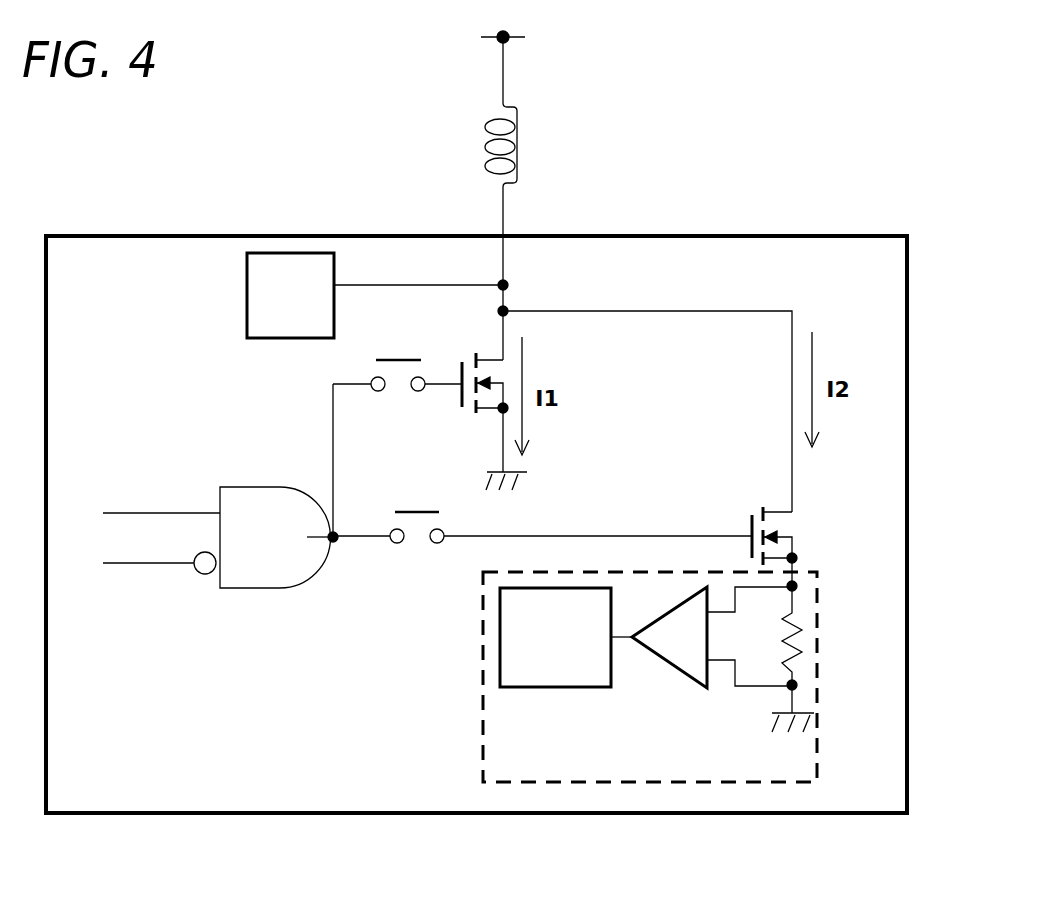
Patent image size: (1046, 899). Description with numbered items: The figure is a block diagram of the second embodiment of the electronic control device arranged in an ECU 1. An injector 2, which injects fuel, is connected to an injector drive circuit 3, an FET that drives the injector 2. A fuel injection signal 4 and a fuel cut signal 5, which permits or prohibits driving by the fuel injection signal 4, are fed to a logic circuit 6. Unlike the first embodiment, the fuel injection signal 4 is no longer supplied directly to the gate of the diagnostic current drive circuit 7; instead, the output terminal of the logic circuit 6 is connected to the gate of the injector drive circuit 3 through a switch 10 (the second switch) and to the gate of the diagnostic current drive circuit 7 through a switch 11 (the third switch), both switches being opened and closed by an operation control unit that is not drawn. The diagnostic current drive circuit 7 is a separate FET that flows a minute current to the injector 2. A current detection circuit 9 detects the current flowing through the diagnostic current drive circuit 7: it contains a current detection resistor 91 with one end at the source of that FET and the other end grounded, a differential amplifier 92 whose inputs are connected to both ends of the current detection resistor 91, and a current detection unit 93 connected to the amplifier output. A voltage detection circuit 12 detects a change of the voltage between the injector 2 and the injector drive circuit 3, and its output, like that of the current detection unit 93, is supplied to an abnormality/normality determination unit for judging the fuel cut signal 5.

The ECU 1 is at (793, 228).
The injector 2 is at (519, 118).
The injector drive circuit 3 is at (486, 350).
The fuel injection signal 4 is at (151, 513).
The fuel cut signal 5 is at (152, 563).
The logic circuit 6 is at (240, 486).
The diagnostic current drive circuit 7 is at (756, 496).
The current detection circuit 9 is at (643, 670).
The switch 10 is at (377, 452).
The switch 11 is at (413, 565).
The voltage detection circuit 12 is at (251, 338).
The current detection resistor 91 is at (810, 658).
The differential amplifier 92 is at (652, 657).
The current detection unit 93 is at (556, 687).